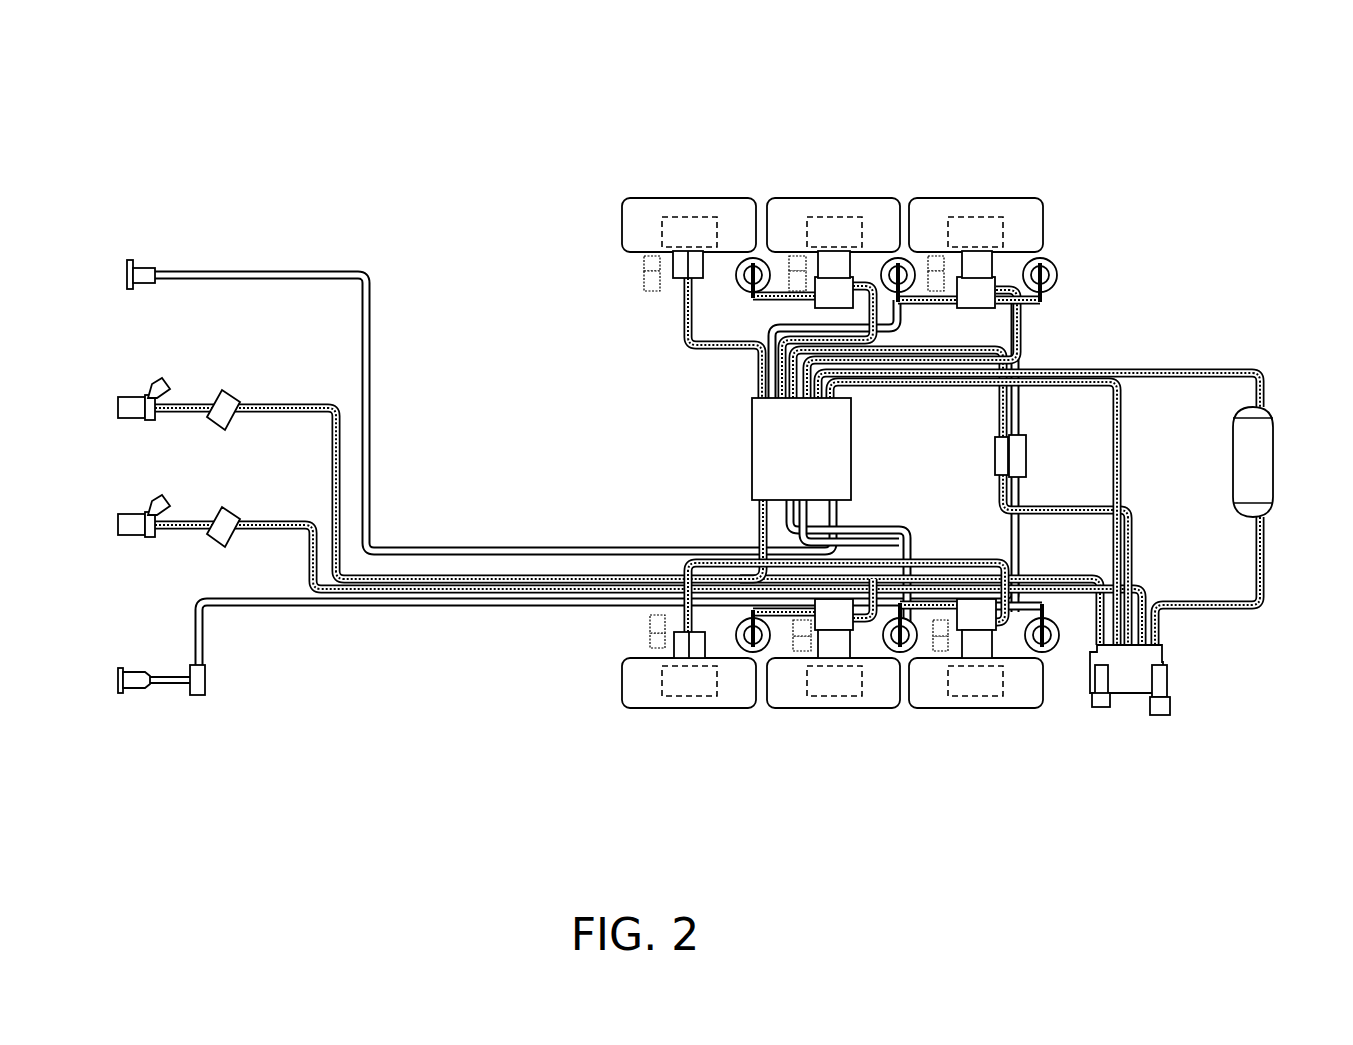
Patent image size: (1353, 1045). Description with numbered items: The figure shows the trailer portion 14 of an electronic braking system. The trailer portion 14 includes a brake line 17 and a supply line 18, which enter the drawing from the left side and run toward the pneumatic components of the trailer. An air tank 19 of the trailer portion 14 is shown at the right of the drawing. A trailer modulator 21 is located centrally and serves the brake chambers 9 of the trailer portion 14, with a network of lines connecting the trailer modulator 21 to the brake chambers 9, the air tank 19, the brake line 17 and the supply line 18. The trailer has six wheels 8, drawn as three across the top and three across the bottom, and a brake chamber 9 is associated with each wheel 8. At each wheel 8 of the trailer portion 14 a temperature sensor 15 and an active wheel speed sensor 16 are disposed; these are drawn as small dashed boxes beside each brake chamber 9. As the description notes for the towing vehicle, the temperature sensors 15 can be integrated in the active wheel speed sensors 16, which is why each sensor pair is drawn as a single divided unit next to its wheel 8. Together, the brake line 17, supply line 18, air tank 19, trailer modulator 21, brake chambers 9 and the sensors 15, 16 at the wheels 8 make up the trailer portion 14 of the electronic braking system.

The wheel 8 is at (700, 198).
The brake chamber 9 is at (704, 268).
The trailer portion 14 is at (375, 148).
The temperature sensor 15 is at (643, 263).
The active wheel speed sensor 16 is at (643, 280).
The brake line 17 is at (295, 407).
The supply line 18 is at (283, 527).
The air tank 19 is at (1275, 430).
The trailer modulator 21 is at (752, 440).